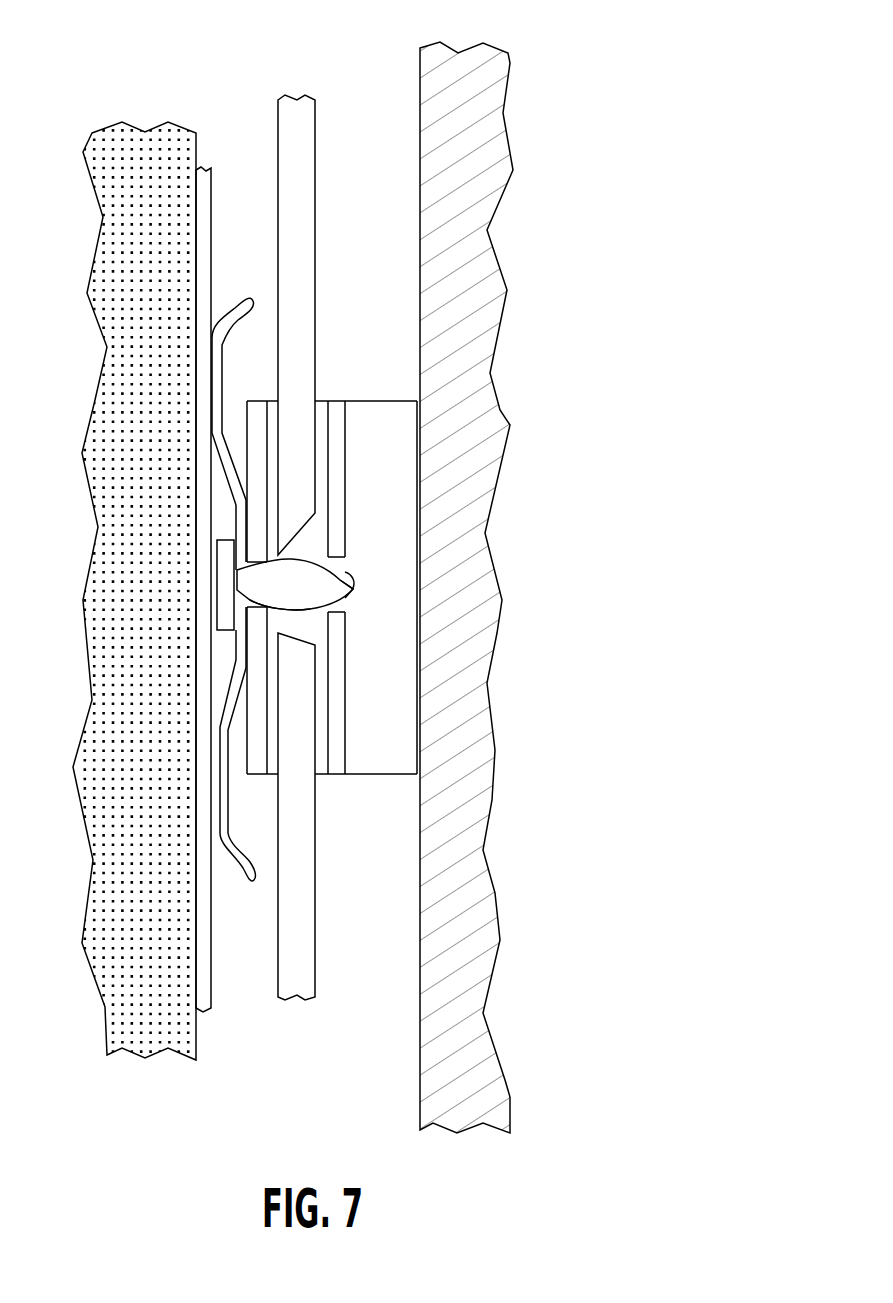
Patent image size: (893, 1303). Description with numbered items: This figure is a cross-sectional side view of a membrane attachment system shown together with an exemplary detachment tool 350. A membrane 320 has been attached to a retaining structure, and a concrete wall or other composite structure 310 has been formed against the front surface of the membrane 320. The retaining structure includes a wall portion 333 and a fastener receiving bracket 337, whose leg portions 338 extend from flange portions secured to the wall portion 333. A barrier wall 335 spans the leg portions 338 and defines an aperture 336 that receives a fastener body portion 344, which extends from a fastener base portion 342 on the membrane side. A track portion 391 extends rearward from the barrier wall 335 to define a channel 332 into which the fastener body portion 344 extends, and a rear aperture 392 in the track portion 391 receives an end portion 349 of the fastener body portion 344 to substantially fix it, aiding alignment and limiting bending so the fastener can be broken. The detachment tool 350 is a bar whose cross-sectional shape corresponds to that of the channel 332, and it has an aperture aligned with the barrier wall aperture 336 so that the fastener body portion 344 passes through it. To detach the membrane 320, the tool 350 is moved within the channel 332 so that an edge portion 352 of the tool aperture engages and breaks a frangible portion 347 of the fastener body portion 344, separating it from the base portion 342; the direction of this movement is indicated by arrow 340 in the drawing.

The composite structure 310 is at (135, 720).
The membrane 320 is at (203, 590).
The channel 332 is at (335, 810).
The wall portion 333 is at (468, 605).
The barrier wall 335 is at (255, 452).
The aperture 336 is at (252, 605).
The fastener receiving bracket 337 is at (322, 366).
The leg portion 338 is at (306, 542).
The biasing direction 340 is at (222, 690).
The fastener base portion 342 is at (224, 456).
The fastener body portion 344 is at (270, 597).
The frangible portion 347 is at (310, 577).
The end portion 349 is at (353, 589).
The detachment tool 350 is at (303, 233).
The edge portion 352 is at (270, 547).
The track portion 391 is at (328, 423).
The rear aperture 392 is at (345, 572).